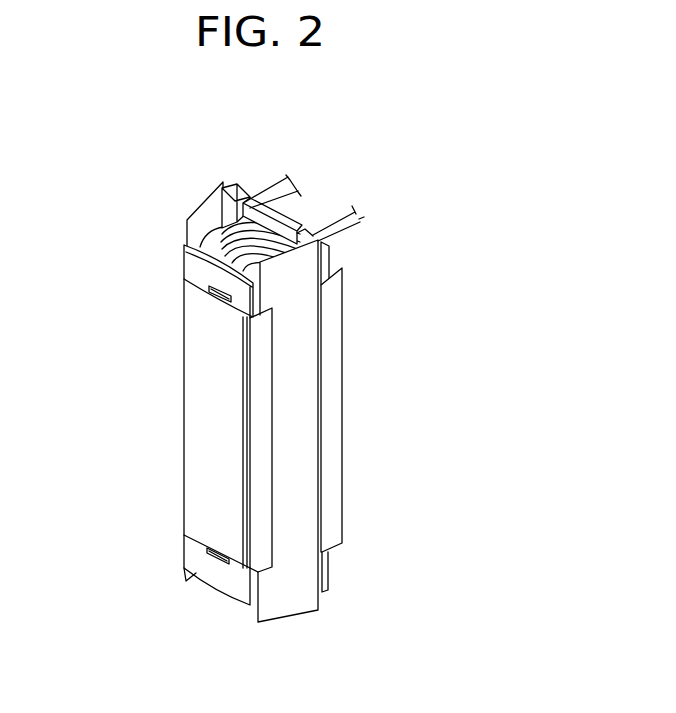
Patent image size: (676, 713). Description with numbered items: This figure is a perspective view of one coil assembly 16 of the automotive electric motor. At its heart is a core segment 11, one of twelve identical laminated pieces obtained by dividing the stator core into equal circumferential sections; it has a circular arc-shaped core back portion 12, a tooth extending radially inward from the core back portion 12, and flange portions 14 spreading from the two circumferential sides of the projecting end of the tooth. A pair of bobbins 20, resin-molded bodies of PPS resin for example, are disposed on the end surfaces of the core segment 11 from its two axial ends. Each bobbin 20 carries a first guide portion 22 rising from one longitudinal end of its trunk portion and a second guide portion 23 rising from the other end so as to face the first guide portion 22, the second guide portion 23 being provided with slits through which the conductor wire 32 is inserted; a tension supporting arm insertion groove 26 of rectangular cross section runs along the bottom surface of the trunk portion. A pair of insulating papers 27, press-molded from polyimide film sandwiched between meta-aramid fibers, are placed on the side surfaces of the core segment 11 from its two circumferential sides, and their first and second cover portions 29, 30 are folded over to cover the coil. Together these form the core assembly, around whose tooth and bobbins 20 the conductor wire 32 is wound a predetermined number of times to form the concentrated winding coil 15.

The core segment 11 is at (208, 400).
The core back portion 12 is at (340, 348).
The flange portion 14 is at (192, 338).
The concentrated winding coil 15 is at (262, 232).
The coil assembly 16 is at (124, 118).
The bobbin 20 is at (181, 244).
The first guide portion 22 is at (181, 254).
The second guide portion 23 is at (231, 189).
The tension supporting arm insertion groove 26 is at (212, 300).
The insulating paper 27 is at (306, 502).
The first cover portion 29 is at (258, 462).
The second cover portion 30 is at (303, 420).
The conductor wire 32 is at (362, 223).